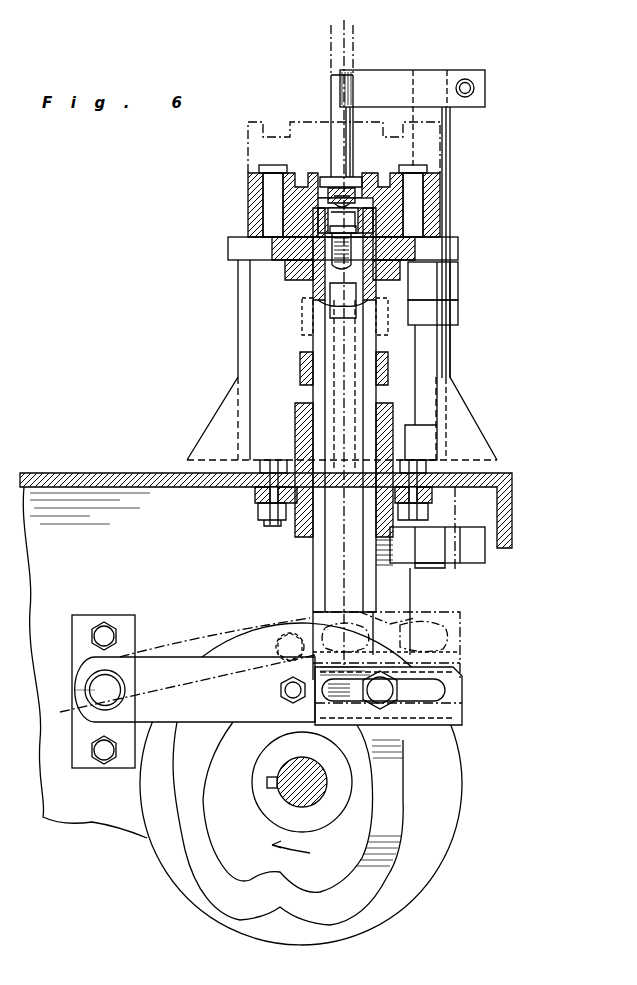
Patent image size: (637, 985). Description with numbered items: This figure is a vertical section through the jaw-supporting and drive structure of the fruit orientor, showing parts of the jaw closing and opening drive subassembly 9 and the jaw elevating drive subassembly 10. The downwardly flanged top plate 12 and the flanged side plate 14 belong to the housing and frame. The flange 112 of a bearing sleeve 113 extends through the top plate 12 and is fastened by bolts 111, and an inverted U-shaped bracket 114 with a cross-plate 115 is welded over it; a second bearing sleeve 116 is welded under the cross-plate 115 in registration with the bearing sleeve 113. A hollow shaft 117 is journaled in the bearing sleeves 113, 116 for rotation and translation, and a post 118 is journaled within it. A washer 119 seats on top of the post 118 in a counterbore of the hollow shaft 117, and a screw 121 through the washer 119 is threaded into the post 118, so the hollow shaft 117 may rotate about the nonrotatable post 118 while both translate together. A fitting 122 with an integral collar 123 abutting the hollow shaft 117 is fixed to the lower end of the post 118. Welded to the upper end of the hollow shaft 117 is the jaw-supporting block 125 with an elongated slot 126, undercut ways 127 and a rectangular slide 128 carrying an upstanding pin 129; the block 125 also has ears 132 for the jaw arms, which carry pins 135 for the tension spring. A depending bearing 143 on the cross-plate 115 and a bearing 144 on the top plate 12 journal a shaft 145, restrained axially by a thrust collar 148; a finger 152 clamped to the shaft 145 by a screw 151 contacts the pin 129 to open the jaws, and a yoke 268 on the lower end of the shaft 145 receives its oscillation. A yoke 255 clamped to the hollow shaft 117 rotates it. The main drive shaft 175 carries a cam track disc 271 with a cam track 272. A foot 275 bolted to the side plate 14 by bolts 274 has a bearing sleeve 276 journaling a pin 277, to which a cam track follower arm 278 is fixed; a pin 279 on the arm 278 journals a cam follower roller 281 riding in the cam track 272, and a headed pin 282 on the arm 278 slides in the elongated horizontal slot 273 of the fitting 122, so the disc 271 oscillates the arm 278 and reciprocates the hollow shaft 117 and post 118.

The jaw closing and opening drive subassembly 9 is at (511, 110).
The jaw elevating drive subassembly 10 is at (431, 669).
The top plate 12 is at (125, 468).
The side plate 14 is at (124, 546).
The bolts 111 is at (268, 522).
The flange 112 is at (255, 497).
The bearing sleeve 113 is at (297, 436).
The inverted U-shaped bracket 114 is at (238, 342).
The cross-plate 115 is at (232, 248).
The bearing sleeve 116 is at (298, 280).
The hollow shaft 117 is at (312, 342).
The post 118 is at (360, 300).
The washer 119 is at (360, 230).
The screw 121 is at (370, 212).
The fitting 122 is at (414, 706).
The collar 123 is at (326, 627).
The jaw-supporting block 125 is at (300, 174).
The elongated slot 126 is at (336, 174).
The undercut grooves or ways 127 is at (351, 170).
The rectangular slide 128 is at (326, 198).
The upstanding pin 129 is at (330, 110).
The ears 132 is at (440, 212).
The pins 135 is at (265, 212).
The depending bearing 143 is at (458, 282).
The bearing 144 is at (408, 469).
The shaft 145 is at (452, 153).
The thrust collar 148 is at (458, 316).
The screw 151 is at (468, 80).
The finger 152 is at (390, 77).
The main drive shaft 175 is at (292, 798).
The yoke 255 is at (300, 374).
The yoke 268 is at (478, 562).
The cam track disc 271 is at (450, 846).
The cam track 272 is at (404, 803).
The elongated horizontal slot 273 is at (452, 690).
The bolts 274 is at (108, 626).
The foot 275 is at (74, 628).
The bearing sleeve 276 is at (90, 700).
The pin 277 is at (98, 698).
The cam track follower arm 278 is at (191, 724).
The pin 279 is at (278, 693).
The cam follower roller 281 is at (284, 660).
The headed pin 282 is at (392, 708).